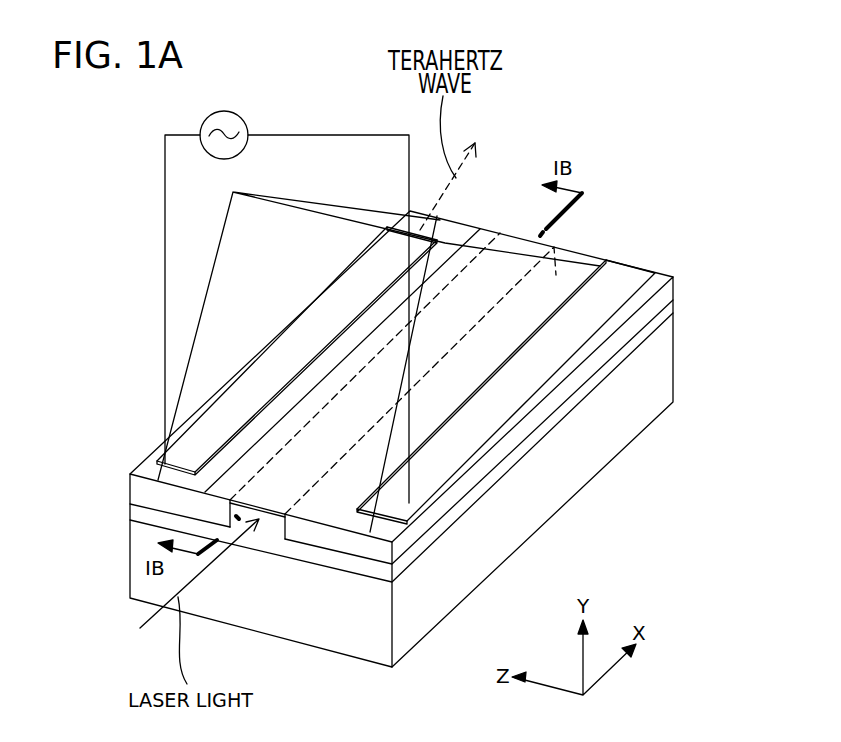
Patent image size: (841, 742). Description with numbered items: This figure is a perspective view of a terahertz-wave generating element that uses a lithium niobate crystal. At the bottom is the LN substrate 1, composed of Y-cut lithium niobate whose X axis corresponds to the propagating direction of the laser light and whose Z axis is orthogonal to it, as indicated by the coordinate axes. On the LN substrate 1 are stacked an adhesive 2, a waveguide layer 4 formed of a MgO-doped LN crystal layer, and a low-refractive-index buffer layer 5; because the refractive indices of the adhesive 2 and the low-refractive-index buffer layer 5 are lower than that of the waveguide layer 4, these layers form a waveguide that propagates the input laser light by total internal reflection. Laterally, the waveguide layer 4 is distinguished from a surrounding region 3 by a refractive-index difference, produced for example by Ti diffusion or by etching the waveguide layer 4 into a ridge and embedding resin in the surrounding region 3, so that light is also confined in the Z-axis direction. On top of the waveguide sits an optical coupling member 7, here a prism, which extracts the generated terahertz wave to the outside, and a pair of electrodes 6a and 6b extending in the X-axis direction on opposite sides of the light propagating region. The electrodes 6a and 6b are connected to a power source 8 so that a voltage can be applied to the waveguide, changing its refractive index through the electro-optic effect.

The LN substrate 1 is at (663, 378).
The adhesive 2 is at (672, 306).
The surrounding region 3 is at (657, 282).
The waveguide layer 4 is at (270, 527).
The low-refractive-index buffer layer 5 is at (205, 494).
The electrode 6a is at (160, 451).
The electrode 6b is at (480, 443).
The optical coupling member 7 is at (270, 224).
The power source 8 is at (222, 111).